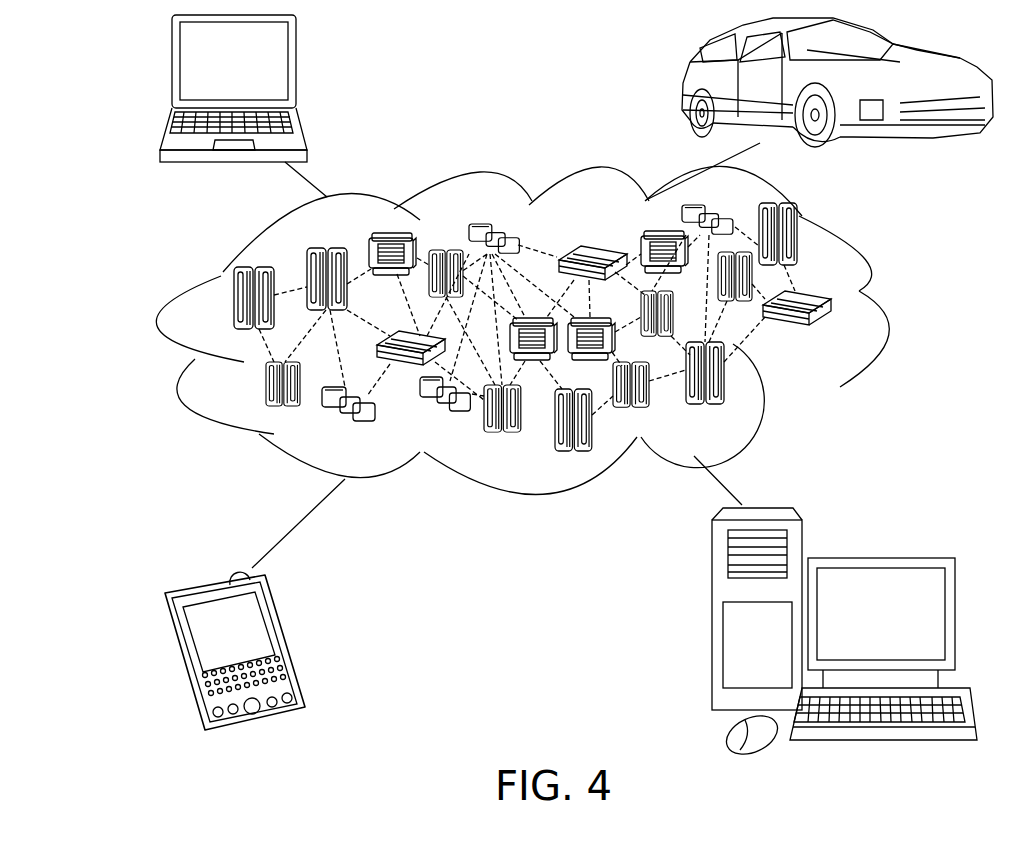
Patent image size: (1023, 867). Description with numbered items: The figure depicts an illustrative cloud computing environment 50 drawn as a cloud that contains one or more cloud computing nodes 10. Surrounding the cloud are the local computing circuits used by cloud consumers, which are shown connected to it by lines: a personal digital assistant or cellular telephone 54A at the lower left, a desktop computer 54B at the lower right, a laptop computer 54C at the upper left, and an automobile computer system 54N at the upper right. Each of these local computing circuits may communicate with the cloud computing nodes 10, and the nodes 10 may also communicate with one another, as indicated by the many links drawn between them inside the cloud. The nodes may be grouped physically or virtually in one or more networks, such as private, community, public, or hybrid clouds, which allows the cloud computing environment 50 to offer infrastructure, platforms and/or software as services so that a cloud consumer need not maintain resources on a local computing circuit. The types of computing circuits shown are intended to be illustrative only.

The cloud computing environment 50 is at (880, 309).
The cloud computing node 10 is at (828, 334).
The personal digital assistant (PDA) or cellular telephone 54A is at (288, 640).
The desktop computer 54B is at (878, 558).
The laptop computer 54C is at (296, 70).
The automobile computer system 54N is at (682, 84).